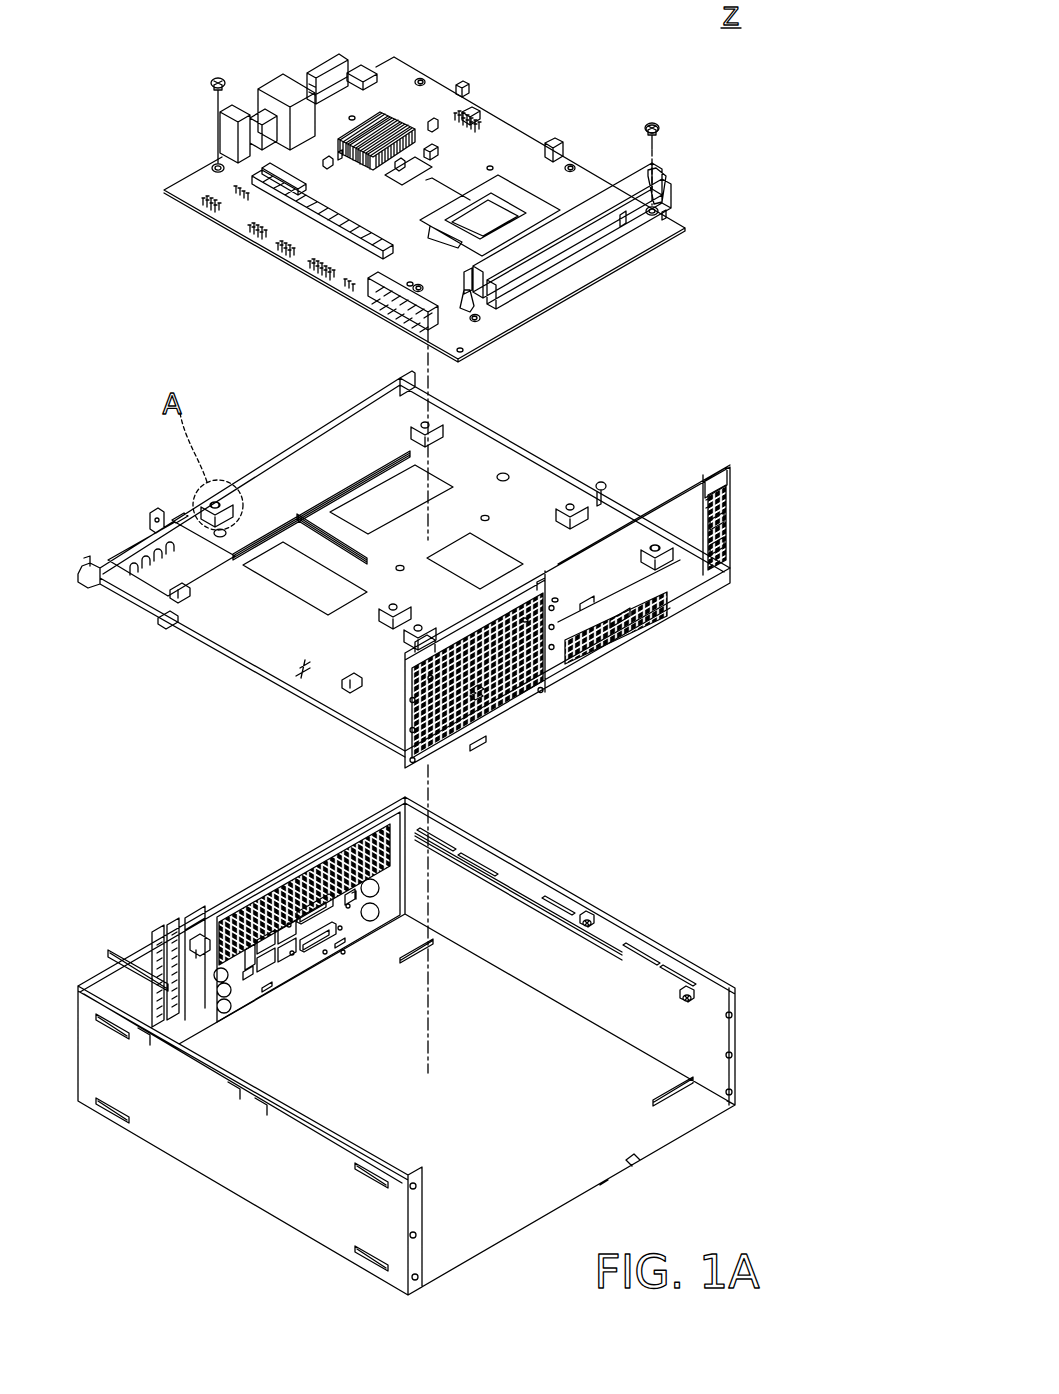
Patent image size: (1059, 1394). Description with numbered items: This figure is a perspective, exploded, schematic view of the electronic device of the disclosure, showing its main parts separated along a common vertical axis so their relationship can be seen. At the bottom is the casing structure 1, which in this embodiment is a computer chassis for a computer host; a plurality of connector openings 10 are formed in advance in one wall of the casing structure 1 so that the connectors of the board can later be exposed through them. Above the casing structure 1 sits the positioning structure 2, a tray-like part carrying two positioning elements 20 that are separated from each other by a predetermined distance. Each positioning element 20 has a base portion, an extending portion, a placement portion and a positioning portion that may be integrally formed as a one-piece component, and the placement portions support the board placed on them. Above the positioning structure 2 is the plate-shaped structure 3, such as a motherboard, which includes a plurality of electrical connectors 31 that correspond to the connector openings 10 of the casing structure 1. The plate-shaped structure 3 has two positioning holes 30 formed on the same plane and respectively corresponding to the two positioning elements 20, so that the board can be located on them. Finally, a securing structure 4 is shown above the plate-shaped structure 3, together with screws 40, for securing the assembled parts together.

The casing structure 1 is at (597, 893).
The positioning structure 2 is at (558, 441).
The plate-shaped structure 3 is at (522, 113).
The securing structure 4 is at (665, 119).
The connector openings 10 is at (322, 943).
The positioning elements 20 is at (220, 502).
The positioning holes 30 is at (214, 165).
The electrical connectors 31 is at (322, 82).
The screw 40 is at (211, 86).